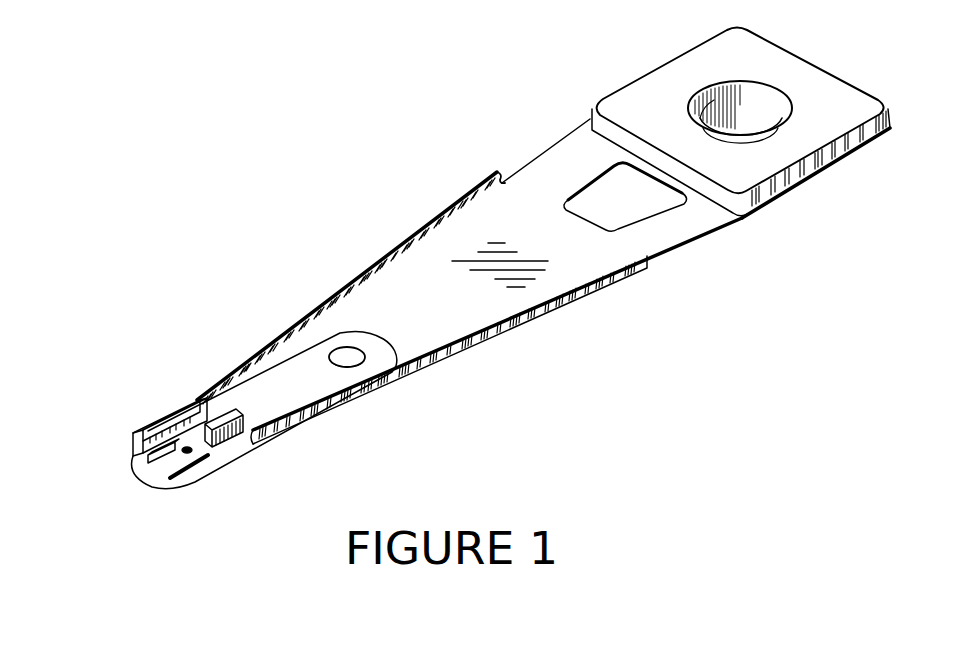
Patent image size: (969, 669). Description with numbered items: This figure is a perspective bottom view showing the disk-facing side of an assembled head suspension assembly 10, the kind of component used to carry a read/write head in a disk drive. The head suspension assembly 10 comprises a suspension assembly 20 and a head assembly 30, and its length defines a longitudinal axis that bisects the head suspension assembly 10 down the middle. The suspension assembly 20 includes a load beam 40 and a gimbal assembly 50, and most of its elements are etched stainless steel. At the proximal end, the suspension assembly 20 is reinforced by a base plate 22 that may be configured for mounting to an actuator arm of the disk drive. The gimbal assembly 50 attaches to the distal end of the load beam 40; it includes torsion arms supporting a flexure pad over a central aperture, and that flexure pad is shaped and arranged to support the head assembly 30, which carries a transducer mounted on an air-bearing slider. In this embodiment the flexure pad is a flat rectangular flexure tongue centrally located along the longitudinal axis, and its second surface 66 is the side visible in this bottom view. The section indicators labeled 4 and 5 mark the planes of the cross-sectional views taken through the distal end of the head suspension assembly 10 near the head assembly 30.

The head suspension assembly 10 is at (379, 160).
The suspension assembly 20 is at (540, 339).
The base plate 22 is at (701, 68).
The head assembly 30 is at (126, 431).
The load beam 40 is at (418, 308).
The gimbal assembly 50 is at (219, 497).
The second surface 66 is at (152, 478).
The section line 4- 4 is at (376, 461).
The section line 5- 5 is at (63, 454).